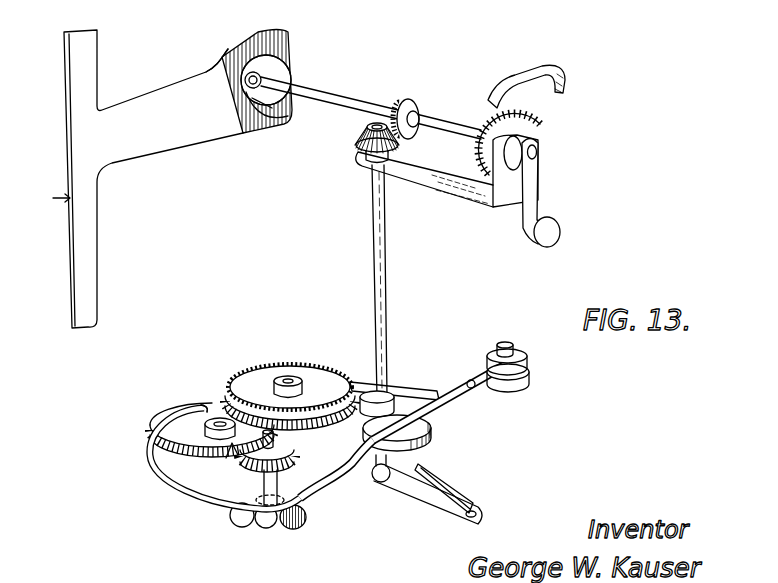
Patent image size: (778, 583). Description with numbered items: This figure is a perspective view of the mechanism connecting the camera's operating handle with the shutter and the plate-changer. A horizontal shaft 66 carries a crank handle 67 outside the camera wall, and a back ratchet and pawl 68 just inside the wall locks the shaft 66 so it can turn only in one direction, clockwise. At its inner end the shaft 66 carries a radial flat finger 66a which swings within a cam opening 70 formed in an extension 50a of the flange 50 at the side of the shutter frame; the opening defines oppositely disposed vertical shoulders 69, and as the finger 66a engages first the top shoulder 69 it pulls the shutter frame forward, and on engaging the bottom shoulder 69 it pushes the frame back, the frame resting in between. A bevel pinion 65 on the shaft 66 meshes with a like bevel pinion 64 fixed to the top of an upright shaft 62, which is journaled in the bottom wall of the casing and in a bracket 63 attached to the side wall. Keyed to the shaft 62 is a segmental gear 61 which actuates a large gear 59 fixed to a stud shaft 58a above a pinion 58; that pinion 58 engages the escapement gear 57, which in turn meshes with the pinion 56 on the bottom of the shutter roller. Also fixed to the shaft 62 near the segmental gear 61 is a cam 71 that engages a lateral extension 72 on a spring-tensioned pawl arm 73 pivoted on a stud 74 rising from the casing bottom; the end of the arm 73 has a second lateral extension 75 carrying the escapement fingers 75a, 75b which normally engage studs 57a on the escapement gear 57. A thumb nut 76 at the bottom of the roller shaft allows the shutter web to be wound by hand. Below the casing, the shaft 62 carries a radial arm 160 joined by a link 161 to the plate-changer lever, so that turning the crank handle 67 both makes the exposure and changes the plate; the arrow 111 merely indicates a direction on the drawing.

The flange 50 is at (143, 143).
The extension of the flange 50a is at (233, 45).
The pinion 56 is at (253, 470).
The escapement gear 57 is at (145, 427).
The studs 57a is at (206, 430).
The pinion 58 is at (303, 390).
The stud shaft 58a is at (289, 376).
The large gear 59 is at (273, 363).
The segmental gear 61 is at (365, 457).
The upright shaft 62 is at (383, 335).
The bracket 63 is at (473, 200).
The bevel pinion 64 is at (357, 137).
The bevel pinion 65 is at (413, 108).
The horizontal shaft 66 is at (450, 128).
The radial flat finger 66a is at (277, 113).
The crank handle 67 is at (533, 197).
The back ratchet and pawl 68 is at (490, 98).
The vertical shoulders 69 is at (263, 117).
The cam opening 70 is at (280, 72).
The cam 71 is at (375, 402).
The lateral extension 72 is at (417, 392).
The spring tensioned pawl arm 73 is at (450, 393).
The stud 74 is at (513, 347).
The second lateral extension 75 is at (177, 465).
The escapement finger 75a is at (197, 405).
The escapement finger 75b is at (227, 465).
The thumb nut 76 is at (277, 523).
The direction arrow 111 is at (48, 204).
The radial arm 160 is at (410, 490).
The link 161 is at (443, 478).